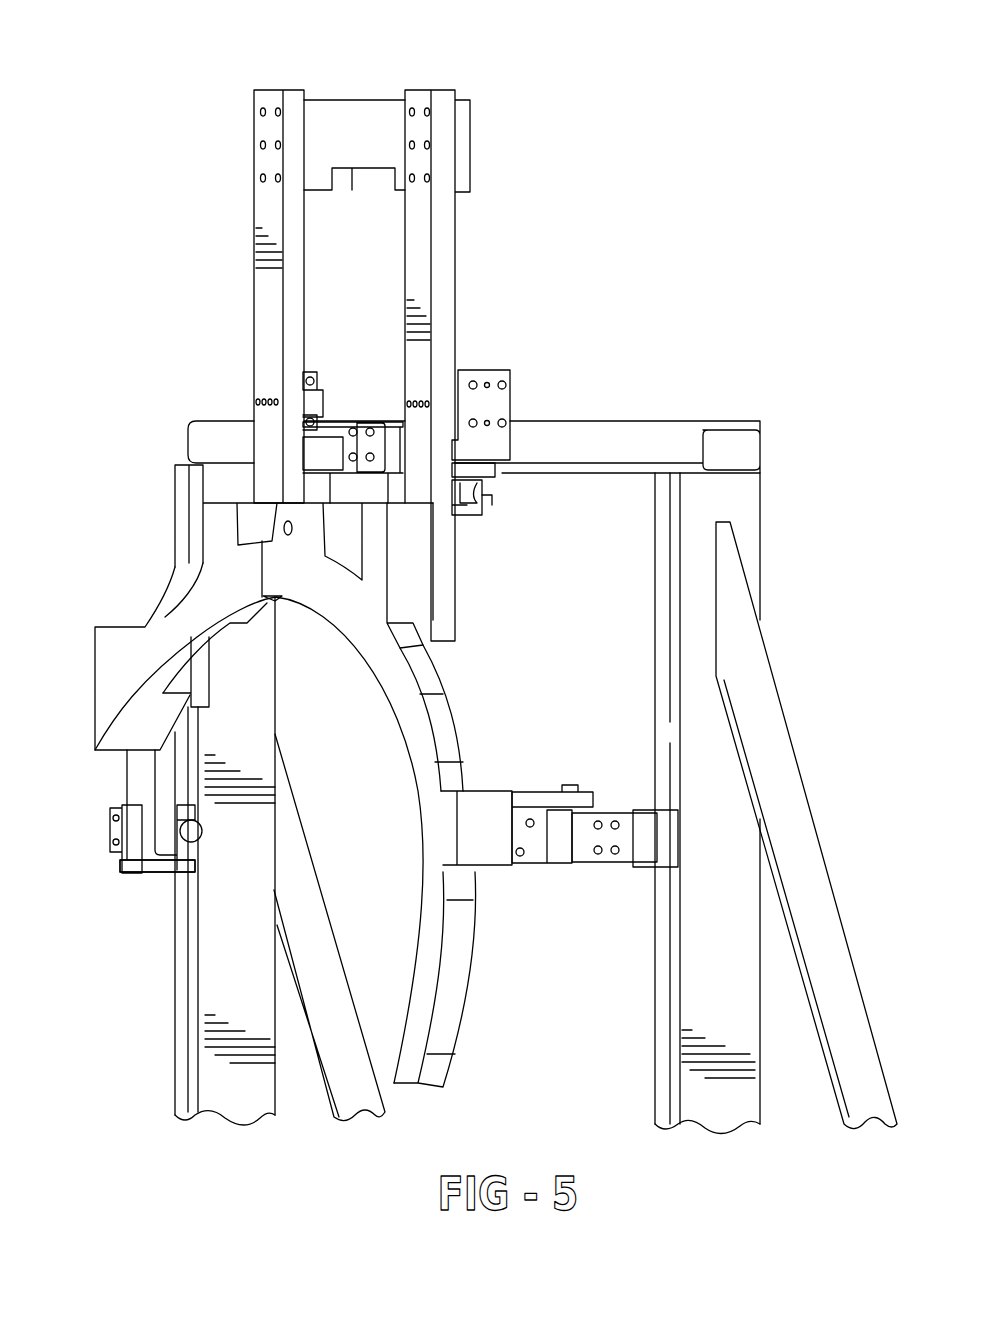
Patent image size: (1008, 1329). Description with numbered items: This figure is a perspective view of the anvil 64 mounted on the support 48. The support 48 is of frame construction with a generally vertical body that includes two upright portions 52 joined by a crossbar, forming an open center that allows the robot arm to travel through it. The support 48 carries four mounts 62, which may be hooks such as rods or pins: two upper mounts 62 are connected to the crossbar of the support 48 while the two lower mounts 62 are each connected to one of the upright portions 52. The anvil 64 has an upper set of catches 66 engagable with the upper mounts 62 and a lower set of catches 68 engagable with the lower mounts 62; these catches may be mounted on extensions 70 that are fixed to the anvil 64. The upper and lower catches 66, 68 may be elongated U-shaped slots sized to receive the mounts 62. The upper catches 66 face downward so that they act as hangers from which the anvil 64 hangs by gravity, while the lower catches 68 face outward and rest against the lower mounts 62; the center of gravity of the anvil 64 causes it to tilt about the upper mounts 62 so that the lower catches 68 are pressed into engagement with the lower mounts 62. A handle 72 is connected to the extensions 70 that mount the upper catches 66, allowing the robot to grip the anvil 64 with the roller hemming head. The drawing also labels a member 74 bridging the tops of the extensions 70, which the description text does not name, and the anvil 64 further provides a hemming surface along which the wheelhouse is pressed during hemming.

The support 48 is at (766, 522).
The upright portions 52 is at (175, 1010).
The mounts 62 is at (484, 495).
The anvil 64 is at (107, 625).
The upper catches 66 is at (467, 515).
The lower catches 68 is at (172, 872).
The extensions 70 is at (442, 262).
The handle 72 is at (178, 608).
The top crossbar 74 is at (340, 96).